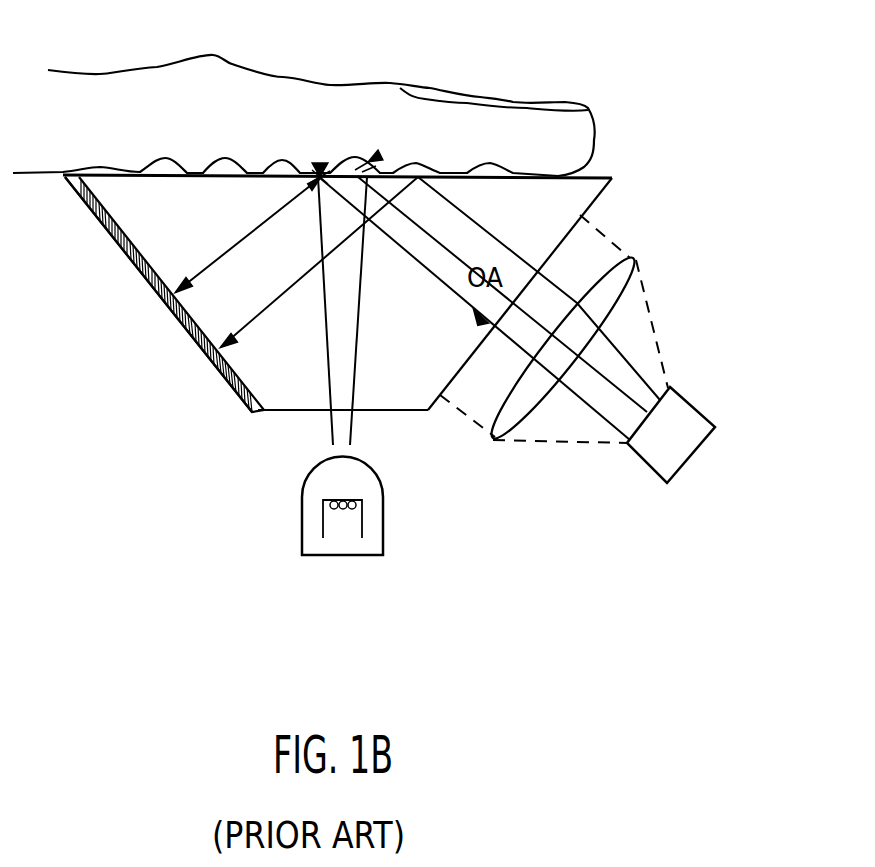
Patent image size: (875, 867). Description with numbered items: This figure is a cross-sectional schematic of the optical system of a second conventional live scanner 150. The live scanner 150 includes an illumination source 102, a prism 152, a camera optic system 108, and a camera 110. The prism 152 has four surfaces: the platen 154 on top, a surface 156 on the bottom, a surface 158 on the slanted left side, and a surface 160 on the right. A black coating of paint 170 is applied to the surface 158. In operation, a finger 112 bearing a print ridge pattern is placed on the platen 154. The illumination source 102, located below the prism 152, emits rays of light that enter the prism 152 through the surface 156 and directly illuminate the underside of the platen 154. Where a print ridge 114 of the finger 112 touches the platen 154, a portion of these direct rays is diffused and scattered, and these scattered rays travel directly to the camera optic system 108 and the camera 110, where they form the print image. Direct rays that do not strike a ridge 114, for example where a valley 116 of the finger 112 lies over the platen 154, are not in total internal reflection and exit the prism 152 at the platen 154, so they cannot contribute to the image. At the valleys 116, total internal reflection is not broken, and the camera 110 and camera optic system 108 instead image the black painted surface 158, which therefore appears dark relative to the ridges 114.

The illumination source 102 is at (302, 518).
The camera optic system 108 is at (640, 262).
The camera 110 is at (705, 447).
The finger 112 is at (152, 137).
The print ridge 114 is at (320, 165).
The valley 116 is at (374, 156).
The live scanner 150 is at (690, 97).
The prism 152 is at (367, 318).
The platen 154 is at (222, 175).
The surface 156 is at (393, 412).
The surface 158 is at (99, 201).
The surface 160 is at (612, 181).
The black coating of paint 170 is at (134, 262).